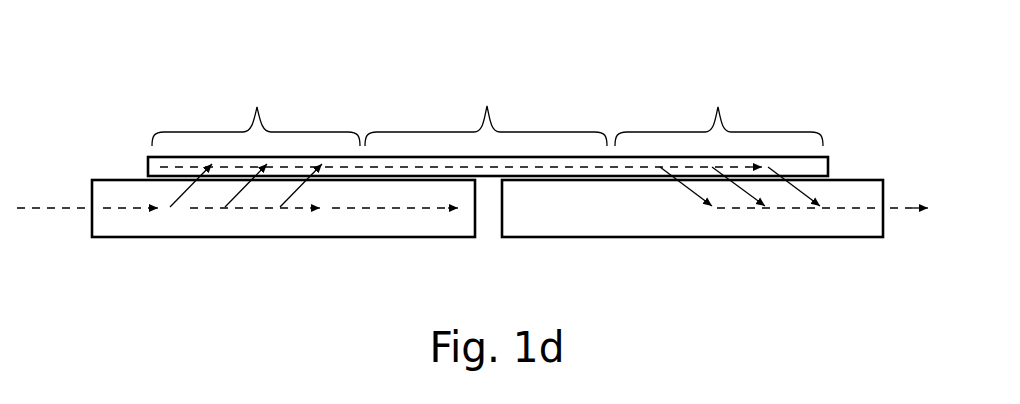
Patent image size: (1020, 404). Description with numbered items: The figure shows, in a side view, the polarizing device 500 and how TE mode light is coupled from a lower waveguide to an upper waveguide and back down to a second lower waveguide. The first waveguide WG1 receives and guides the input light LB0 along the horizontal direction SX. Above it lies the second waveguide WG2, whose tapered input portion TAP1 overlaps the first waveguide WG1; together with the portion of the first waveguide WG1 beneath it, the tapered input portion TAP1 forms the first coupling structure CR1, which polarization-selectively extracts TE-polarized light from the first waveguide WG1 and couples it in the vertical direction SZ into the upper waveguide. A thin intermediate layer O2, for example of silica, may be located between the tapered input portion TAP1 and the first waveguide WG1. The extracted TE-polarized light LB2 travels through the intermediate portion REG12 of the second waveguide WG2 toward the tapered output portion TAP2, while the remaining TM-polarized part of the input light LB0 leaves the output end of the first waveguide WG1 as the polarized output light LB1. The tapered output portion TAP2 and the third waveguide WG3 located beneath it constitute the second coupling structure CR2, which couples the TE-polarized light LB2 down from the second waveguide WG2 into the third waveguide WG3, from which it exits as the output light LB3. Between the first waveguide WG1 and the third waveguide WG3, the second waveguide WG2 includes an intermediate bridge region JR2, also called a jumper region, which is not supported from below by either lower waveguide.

The polarizing device 500 is at (170, 54).
The first waveguide WG1 is at (258, 237).
The second waveguide WG2 is at (422, 168).
The third waveguide WG3 is at (743, 237).
The intermediate bridge region JR2 is at (475, 247).
The input light LB0 is at (50, 203).
The polarized output light LB1 is at (357, 237).
The TE-polarized light LB2 is at (345, 168).
The output light beam LB3 is at (896, 212).
The intermediate layer O2 is at (147, 177).
The tapered input portion TAP1 is at (256, 130).
The first coupling structure CR1 is at (262, 90).
The intermediate portion REG12 is at (486, 111).
The tapered output portion TAP2 is at (719, 130).
The second coupling structure CR2 is at (723, 91).
The vertical direction SZ is at (838, 86).
The horizontal direction SX is at (838, 86).